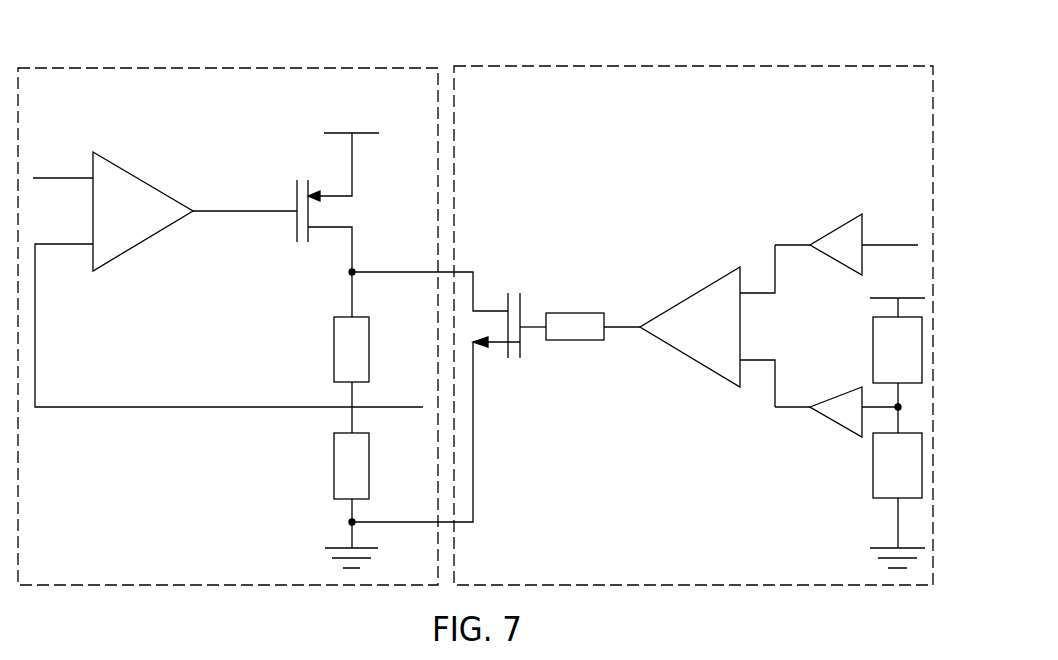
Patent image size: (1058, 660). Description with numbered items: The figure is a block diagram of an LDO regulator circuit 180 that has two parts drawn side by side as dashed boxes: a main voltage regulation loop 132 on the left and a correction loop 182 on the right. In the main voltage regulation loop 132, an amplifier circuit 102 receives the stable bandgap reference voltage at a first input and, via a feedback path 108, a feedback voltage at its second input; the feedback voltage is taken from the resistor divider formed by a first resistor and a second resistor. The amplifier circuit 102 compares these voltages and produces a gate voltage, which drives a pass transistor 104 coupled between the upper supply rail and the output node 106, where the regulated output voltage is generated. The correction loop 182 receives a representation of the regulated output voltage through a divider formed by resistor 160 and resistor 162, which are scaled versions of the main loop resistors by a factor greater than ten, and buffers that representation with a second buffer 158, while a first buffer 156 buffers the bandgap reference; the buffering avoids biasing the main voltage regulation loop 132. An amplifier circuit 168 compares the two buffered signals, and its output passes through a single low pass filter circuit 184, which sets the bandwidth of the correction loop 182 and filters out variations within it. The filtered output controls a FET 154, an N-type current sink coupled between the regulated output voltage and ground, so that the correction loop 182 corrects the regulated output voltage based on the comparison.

The LDO regulator circuit 180 is at (92, 33).
The main voltage regulation loop 132 is at (232, 68).
The correction loop 182 is at (695, 66).
The amplifier circuit 102 is at (145, 180).
The pass transistor 104 is at (297, 227).
The output node 106 is at (353, 300).
The feedback path 108 is at (183, 407).
The FET 154 is at (523, 346).
The low pass filter circuit 184 is at (575, 340).
The amplifier circuit 168 is at (690, 293).
The first buffer 156 is at (832, 258).
The second buffer 158 is at (836, 396).
The resistor 160 is at (873, 350).
The resistor 162 is at (873, 464).